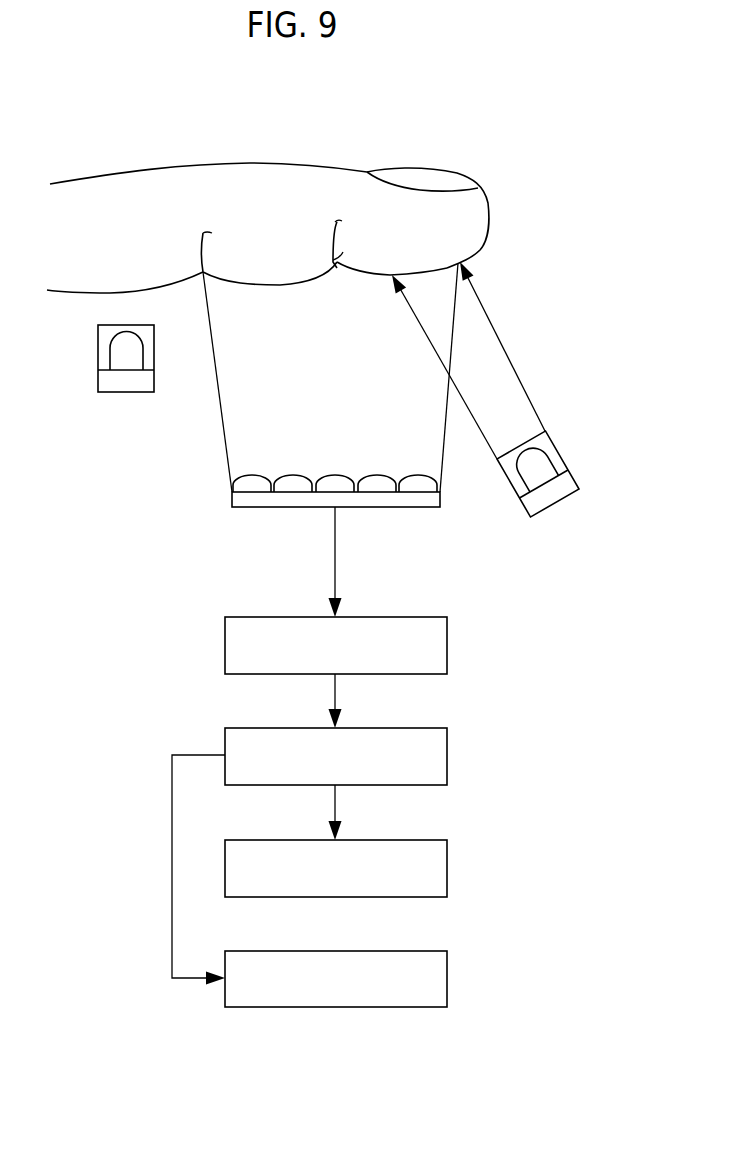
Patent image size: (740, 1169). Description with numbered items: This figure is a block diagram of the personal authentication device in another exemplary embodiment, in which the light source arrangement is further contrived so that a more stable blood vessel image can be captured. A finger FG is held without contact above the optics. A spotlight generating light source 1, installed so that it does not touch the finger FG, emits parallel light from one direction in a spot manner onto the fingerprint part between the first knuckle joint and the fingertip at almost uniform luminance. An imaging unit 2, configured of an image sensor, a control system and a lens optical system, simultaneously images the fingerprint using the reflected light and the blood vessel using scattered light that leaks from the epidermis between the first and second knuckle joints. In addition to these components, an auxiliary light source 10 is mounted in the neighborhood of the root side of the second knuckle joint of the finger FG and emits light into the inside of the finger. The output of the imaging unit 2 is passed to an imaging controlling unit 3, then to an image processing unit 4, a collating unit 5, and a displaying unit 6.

The finger FG is at (222, 162).
The spotlight generating light source 1 is at (543, 423).
The imaging unit 2 is at (232, 500).
The imaging controlling unit 3 is at (336, 645).
The image processing unit 4 is at (336, 756).
The collating unit 5 is at (336, 868).
The displaying unit 6 is at (336, 979).
The auxiliary light source 10 is at (127, 392).